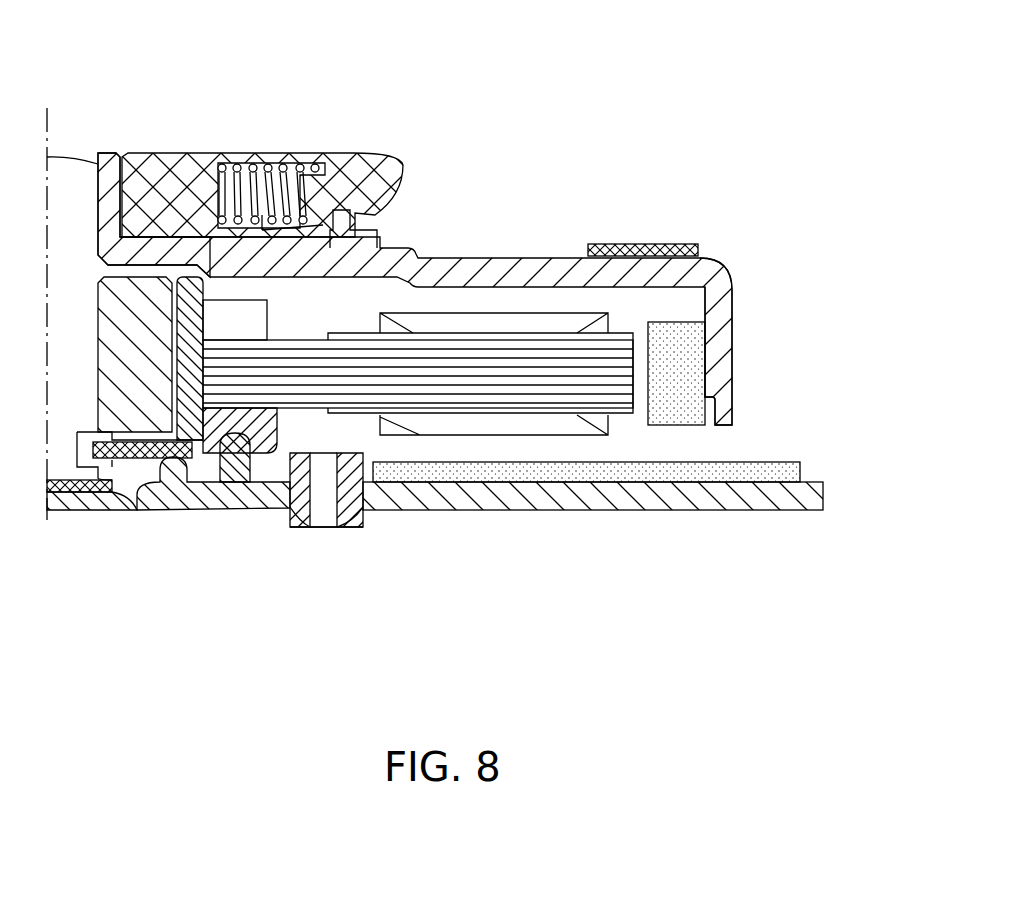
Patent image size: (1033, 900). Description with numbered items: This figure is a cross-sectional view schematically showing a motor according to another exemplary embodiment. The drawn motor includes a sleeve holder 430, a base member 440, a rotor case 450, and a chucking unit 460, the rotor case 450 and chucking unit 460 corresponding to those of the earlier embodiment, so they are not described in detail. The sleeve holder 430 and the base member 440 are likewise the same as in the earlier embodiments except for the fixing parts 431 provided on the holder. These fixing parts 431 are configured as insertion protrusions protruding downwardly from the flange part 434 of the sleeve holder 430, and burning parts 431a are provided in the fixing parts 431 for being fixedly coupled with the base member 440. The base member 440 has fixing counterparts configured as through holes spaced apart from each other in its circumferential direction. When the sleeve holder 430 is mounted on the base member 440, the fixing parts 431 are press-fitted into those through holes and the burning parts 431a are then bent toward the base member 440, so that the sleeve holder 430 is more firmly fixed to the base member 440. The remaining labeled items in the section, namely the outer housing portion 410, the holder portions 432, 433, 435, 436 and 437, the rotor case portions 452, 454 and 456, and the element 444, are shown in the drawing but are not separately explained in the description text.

The housing 410 is at (74, 167).
The sleeve holder 430 is at (548, 626).
The fixing part 431 is at (353, 467).
The burning part 431a is at (340, 500).
The bobbin flange 432 is at (190, 330).
The bracket 433 is at (242, 410).
The flange part 434 is at (353, 527).
The support bar 435 is at (350, 470).
The bobbin body 436 is at (173, 337).
The bobbin base 437 is at (300, 235).
The base member 440 is at (690, 511).
The lever 444 is at (310, 222).
The rotor case 450 is at (398, 262).
The magnet 452 is at (695, 377).
The housing cap 454 is at (100, 165).
The side wall 456 is at (727, 313).
The chucking unit 460 is at (180, 160).